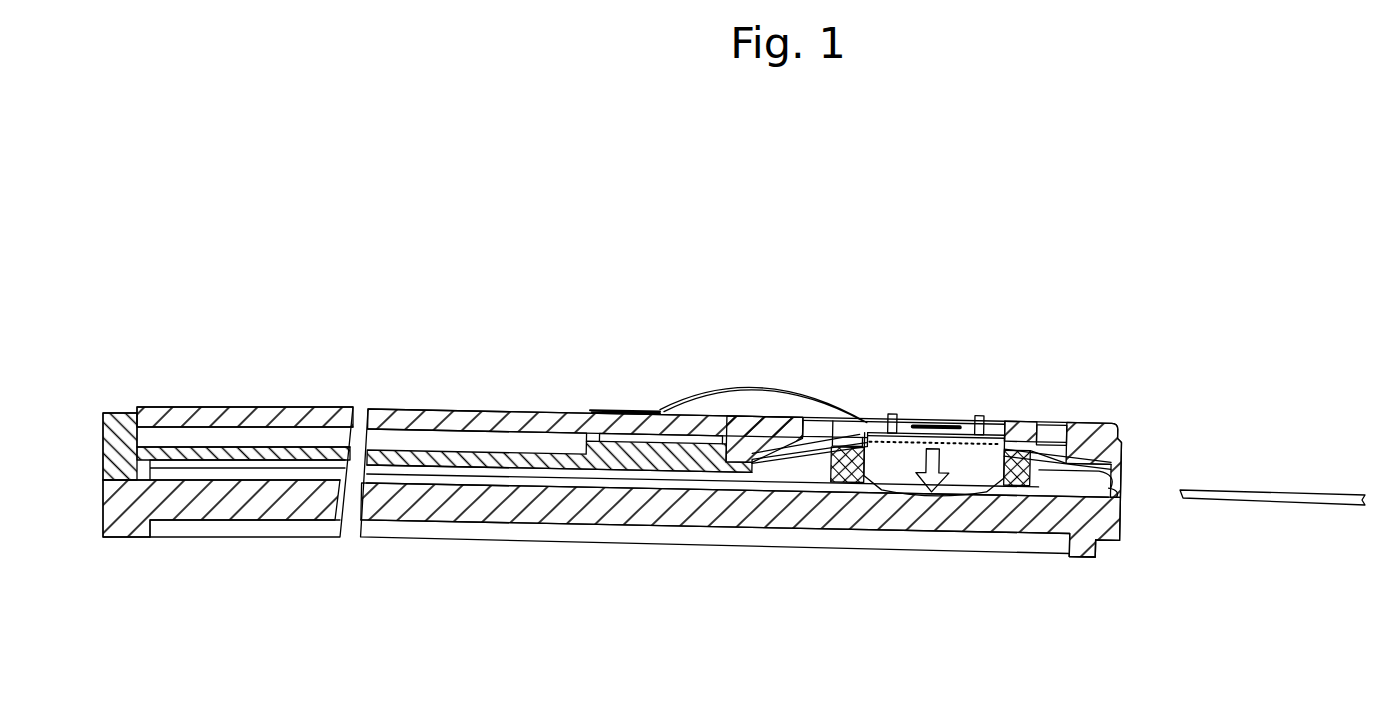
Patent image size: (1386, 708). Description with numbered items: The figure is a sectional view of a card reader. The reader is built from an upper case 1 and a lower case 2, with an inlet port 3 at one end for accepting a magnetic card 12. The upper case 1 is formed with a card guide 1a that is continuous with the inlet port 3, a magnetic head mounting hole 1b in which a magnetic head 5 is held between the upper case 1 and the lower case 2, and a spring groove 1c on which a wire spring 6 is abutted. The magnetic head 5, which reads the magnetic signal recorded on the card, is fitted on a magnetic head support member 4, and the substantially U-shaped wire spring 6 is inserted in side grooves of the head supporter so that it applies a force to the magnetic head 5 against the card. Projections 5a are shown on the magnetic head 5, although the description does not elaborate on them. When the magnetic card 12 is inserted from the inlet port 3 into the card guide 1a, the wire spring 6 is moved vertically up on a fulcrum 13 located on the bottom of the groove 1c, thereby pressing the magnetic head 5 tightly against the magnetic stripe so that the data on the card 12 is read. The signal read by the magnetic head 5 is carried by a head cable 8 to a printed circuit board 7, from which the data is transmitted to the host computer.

The upper case 1 is at (1095, 440).
The card guide 1a is at (803, 487).
The magnetic head mounting hole 1b is at (1020, 440).
The spring groove 1c is at (798, 420).
The lower case 2 is at (916, 500).
The inlet port 3 is at (1107, 490).
The magnetic head support member 4 is at (1010, 445).
The magnetic head 5 is at (968, 458).
The pin 5a is at (892, 415).
The wire spring 6 is at (780, 418).
The printed circuit board 7 is at (443, 410).
The head cable 8 is at (675, 410).
The magnetic card 12 is at (1280, 492).
The fulcrum 13 is at (733, 418).